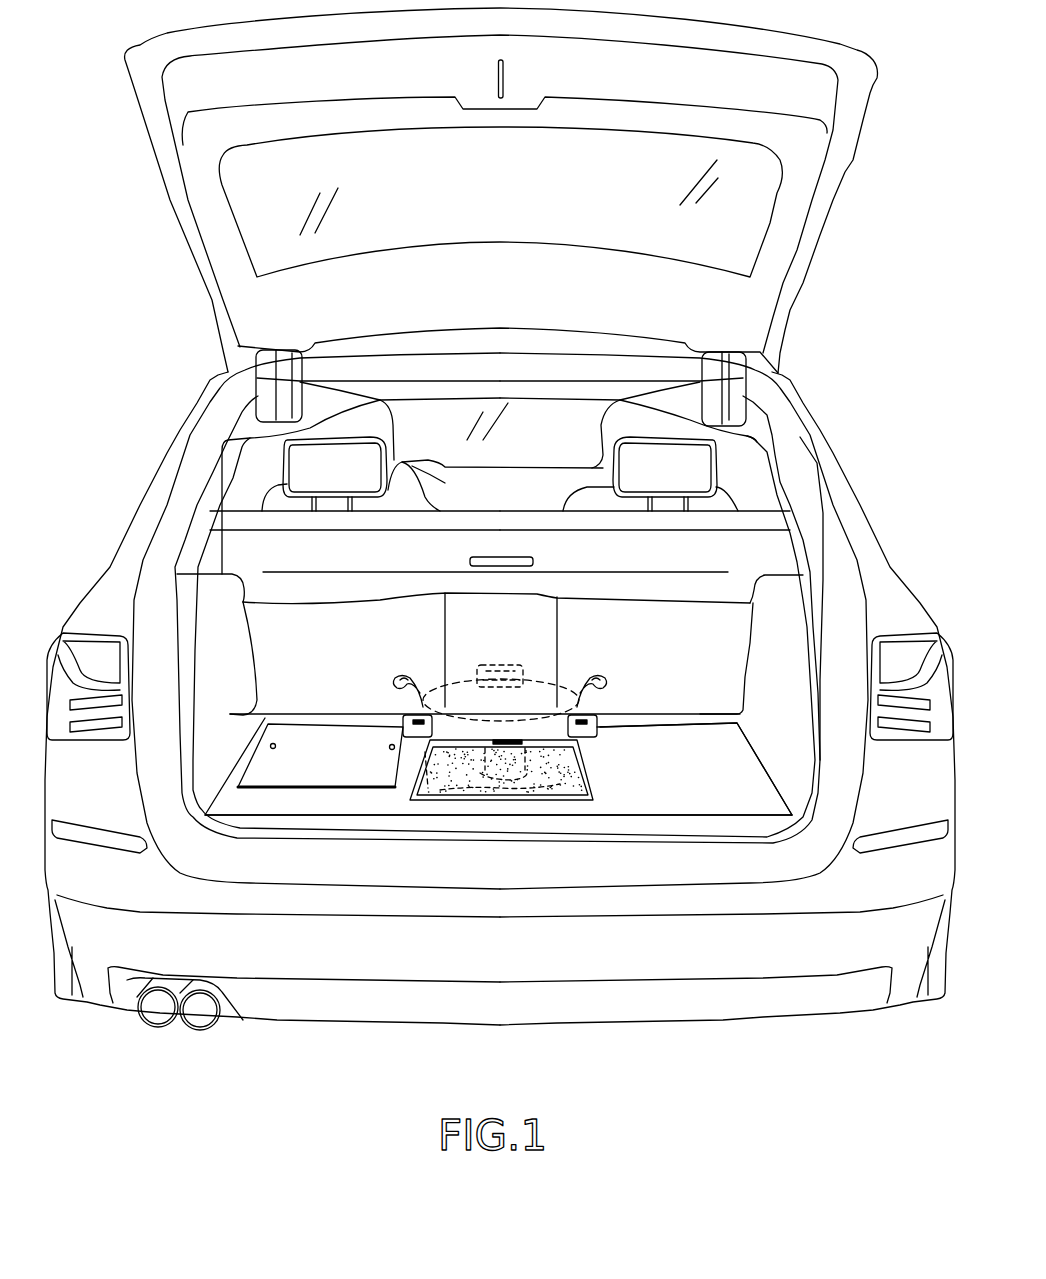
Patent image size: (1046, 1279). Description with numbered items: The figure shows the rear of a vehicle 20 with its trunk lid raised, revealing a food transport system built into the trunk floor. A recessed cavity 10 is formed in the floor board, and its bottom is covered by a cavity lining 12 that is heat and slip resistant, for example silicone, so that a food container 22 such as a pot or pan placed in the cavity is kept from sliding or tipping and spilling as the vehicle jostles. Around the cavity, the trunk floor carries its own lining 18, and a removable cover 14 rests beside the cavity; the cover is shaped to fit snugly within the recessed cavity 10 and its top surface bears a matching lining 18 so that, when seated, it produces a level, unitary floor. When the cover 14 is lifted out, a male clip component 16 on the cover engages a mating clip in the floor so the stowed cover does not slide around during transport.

The recessed cavity 10 is at (427, 770).
The cavity lining 12 is at (586, 766).
The cover 14 is at (325, 788).
The male clip component 16 is at (274, 742).
The lining 18 is at (345, 768).
The vehicle 20 is at (835, 480).
The food container 22 is at (466, 677).